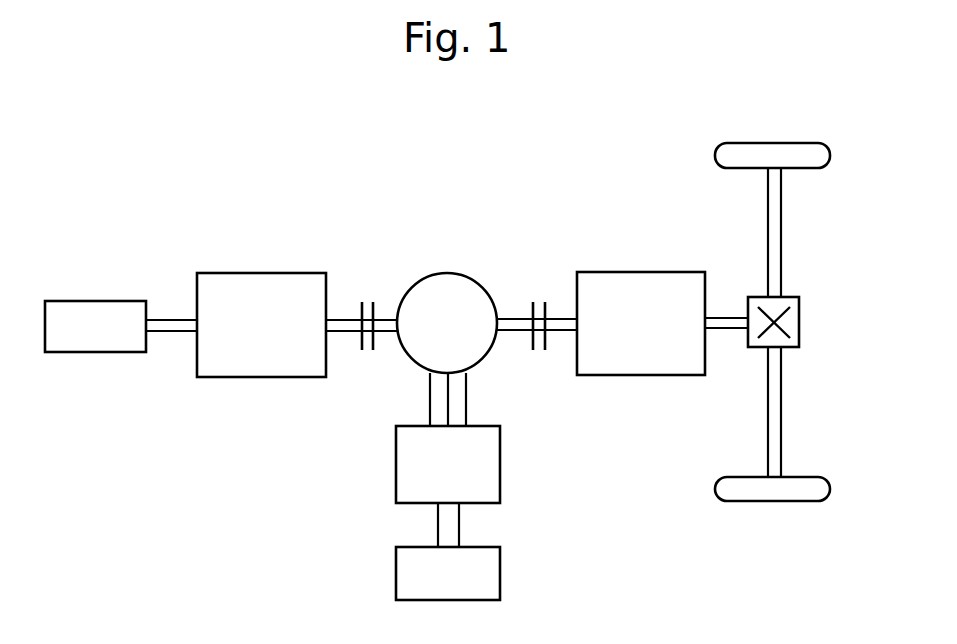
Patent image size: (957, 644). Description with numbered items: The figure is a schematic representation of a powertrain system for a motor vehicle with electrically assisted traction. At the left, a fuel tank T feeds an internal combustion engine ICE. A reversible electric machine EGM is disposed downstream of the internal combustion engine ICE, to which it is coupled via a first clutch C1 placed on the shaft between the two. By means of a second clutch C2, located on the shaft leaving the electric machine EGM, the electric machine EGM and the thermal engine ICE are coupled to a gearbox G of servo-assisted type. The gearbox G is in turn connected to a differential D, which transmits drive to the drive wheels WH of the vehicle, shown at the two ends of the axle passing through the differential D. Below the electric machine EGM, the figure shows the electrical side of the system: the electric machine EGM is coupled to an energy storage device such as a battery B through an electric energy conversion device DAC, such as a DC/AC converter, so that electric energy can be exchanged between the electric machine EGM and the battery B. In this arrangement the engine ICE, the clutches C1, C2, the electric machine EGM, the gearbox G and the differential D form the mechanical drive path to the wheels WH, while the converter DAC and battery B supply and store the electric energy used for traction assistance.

The fuel tank T is at (88, 310).
The internal combustion engine ICE is at (292, 278).
The first clutch C1 is at (368, 288).
The reversible electric machine EGM is at (468, 283).
The second clutch C2 is at (540, 358).
The gearbox G is at (672, 278).
The differential D is at (799, 320).
The drive wheels WH is at (780, 150).
The electric energy conversion device DAC is at (500, 460).
The battery B is at (500, 575).